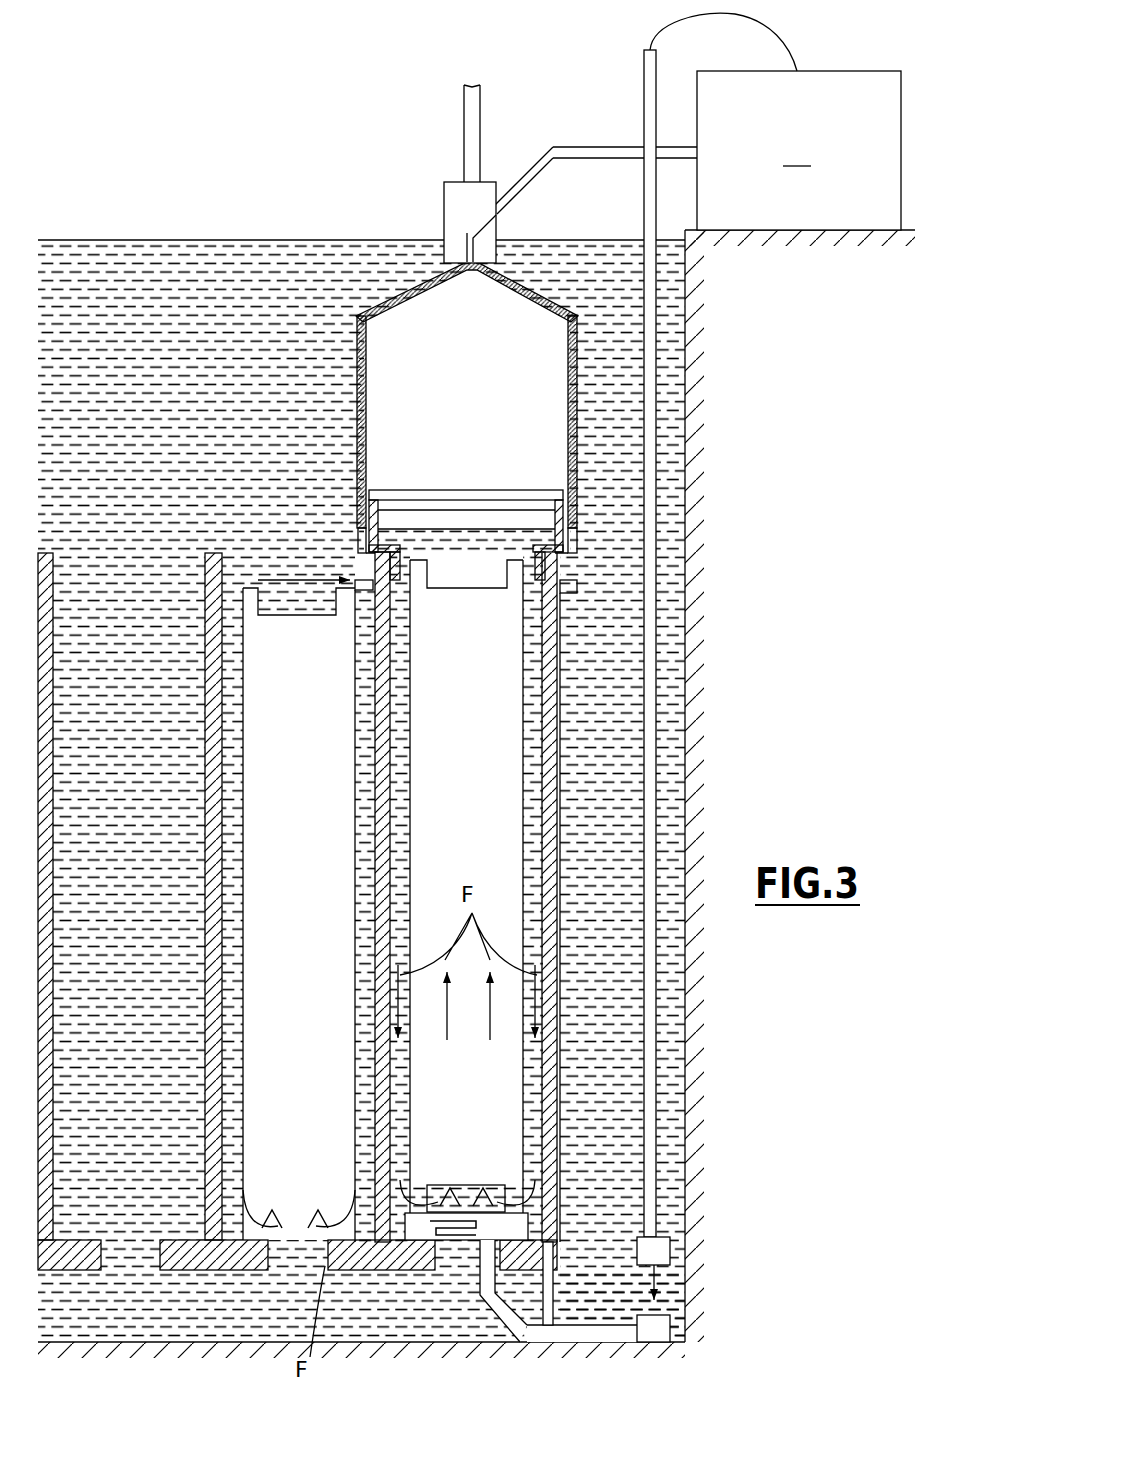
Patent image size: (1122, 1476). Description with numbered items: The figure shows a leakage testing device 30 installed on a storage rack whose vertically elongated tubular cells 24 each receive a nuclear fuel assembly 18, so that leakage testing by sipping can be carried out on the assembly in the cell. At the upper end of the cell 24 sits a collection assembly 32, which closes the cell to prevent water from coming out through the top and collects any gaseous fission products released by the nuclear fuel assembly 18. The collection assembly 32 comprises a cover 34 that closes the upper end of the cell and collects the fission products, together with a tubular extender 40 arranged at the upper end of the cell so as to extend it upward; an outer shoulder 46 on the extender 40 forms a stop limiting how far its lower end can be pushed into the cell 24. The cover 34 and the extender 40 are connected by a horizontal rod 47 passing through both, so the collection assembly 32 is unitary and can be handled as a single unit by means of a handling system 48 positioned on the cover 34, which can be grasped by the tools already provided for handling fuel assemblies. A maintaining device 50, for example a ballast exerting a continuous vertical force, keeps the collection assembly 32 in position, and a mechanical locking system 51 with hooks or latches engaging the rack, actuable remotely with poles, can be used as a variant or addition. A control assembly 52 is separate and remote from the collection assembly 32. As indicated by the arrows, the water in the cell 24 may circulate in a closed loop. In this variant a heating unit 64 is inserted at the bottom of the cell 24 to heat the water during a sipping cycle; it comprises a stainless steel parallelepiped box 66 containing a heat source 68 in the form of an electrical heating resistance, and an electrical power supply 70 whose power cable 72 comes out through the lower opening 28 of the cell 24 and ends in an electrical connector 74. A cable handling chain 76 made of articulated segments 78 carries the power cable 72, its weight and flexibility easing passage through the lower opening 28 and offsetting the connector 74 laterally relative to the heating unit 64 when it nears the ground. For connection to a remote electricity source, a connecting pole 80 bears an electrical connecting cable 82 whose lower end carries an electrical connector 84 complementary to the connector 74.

The leakage testing device 30 is at (340, 196).
The collection assembly 32 is at (396, 368).
The cover 34 is at (355, 440).
The tubular extender 40 is at (510, 495).
The outer shoulder 46 is at (355, 563).
The horizontal rod 47 is at (368, 531).
The handling system 48 is at (497, 222).
The maintaining device 50 is at (250, 592).
The mechanical locking system 51 is at (371, 602).
The control assembly 52 is at (799, 150).
The electrical connecting cable 82 is at (645, 46).
The connecting pole 80 is at (657, 990).
The tubular cell 24 is at (228, 805).
The nuclear fuel assembly 18 is at (257, 935).
The lower opening 28 is at (300, 1262).
The heating unit 64 is at (558, 1290).
The parallelepiped box 66 is at (528, 1226).
The heat source 68 is at (640, 1252).
The electrical connector 84 is at (658, 1258).
The electrical connector 74 is at (690, 1325).
The segments 78 is at (672, 1340).
The cable handling chain 76 is at (604, 1341).
The electrical power supply 70 is at (494, 1327).
The power cable 72 is at (529, 1338).